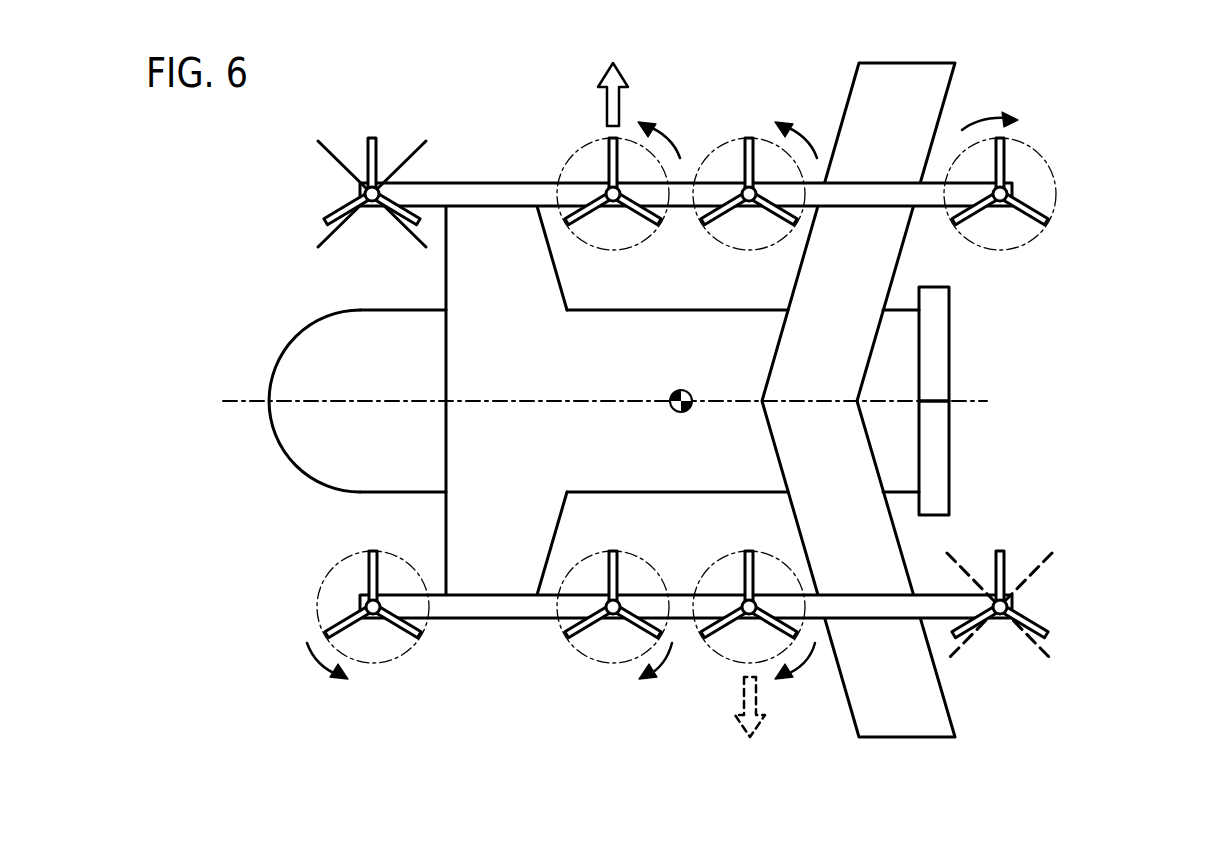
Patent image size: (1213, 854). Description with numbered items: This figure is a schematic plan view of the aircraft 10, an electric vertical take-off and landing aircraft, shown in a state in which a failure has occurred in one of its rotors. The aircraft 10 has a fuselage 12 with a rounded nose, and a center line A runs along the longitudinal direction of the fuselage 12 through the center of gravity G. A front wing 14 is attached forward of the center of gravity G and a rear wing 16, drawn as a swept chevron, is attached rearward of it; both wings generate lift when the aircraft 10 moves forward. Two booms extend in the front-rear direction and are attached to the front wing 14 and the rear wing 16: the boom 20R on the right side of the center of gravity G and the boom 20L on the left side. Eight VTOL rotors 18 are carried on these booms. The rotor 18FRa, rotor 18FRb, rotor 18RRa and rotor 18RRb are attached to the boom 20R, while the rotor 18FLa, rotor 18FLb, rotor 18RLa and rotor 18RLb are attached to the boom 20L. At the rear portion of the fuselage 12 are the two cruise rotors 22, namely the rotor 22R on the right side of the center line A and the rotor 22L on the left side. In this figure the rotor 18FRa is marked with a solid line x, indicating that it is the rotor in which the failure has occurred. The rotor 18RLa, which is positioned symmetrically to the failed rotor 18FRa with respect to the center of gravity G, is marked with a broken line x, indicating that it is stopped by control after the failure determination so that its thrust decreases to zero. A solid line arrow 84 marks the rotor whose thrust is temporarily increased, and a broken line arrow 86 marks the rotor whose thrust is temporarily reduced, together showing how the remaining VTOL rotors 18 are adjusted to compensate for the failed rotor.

The aircraft 10 is at (191, 157).
The fuselage 12 is at (272, 372).
The front wing 14 is at (478, 231).
The rear wing 16 is at (899, 63).
The VTOL rotors 18 is at (749, 409).
The rotor 18FRa is at (371, 137).
The rotor 18FRb is at (597, 158).
The rotor 18RRa is at (1005, 148).
The rotor 18RRb is at (747, 155).
The rotor 18FLa is at (400, 633).
The rotor 18FLb is at (563, 641).
The rotor 18RLa is at (1050, 634).
The rotor 18RLb is at (722, 641).
The boom 20R is at (859, 182).
The boom 20L is at (858, 619).
The cruise rotors 22 is at (999, 401).
The rotor 22R is at (950, 348).
The rotor 22L is at (950, 454).
The solid line arrow 84 is at (624, 72).
The broken line arrow 86 is at (762, 730).
The center line A is at (595, 403).
The center of gravity G is at (673, 410).